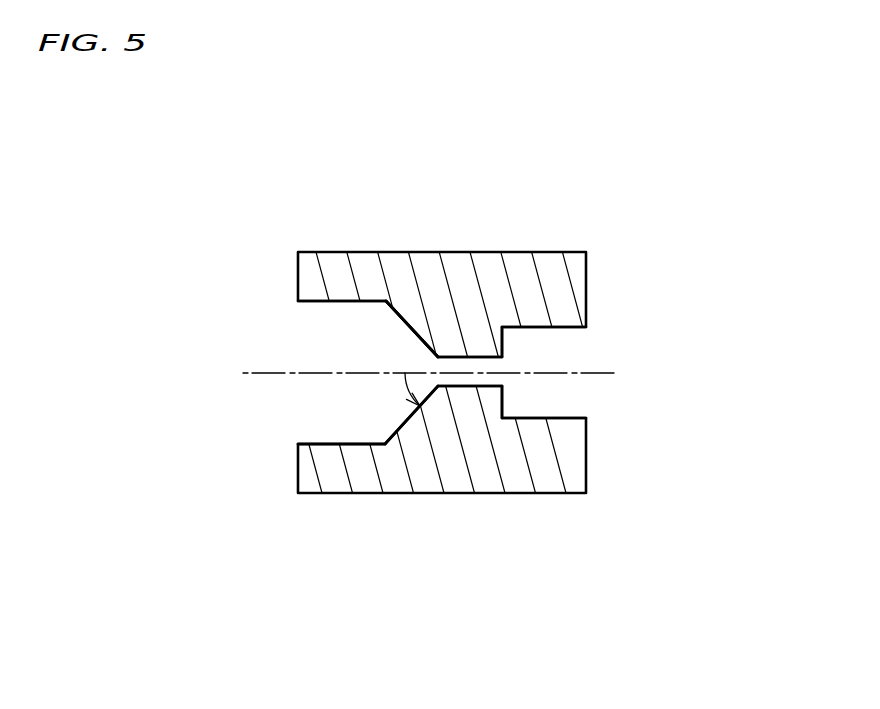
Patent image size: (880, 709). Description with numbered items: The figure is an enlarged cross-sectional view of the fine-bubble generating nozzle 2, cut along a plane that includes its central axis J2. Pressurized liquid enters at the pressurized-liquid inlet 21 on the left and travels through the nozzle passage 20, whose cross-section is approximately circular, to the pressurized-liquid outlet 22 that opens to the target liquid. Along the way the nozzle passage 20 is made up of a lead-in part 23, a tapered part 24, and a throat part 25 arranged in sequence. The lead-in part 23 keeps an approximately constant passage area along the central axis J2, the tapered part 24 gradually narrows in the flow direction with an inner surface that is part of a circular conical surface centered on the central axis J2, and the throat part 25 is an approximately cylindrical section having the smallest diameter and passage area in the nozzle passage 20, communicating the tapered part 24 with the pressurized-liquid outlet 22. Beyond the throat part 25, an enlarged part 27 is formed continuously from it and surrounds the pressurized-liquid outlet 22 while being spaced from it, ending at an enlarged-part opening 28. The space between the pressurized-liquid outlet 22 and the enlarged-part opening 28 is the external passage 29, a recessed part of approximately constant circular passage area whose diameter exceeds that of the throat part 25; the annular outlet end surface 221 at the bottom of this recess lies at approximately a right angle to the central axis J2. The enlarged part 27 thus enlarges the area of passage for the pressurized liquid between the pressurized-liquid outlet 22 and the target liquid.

The fine-bubble generating nozzle 2 is at (233, 198).
The central axis J2 is at (260, 372).
The nozzle passage 20 is at (372, 358).
The pressurized-liquid inlet 21 is at (303, 388).
The outlet end surface 221 is at (505, 343).
The pressurized-liquid outlet 22 is at (500, 364).
The lead-in part 23 is at (332, 450).
The tapered part 24 is at (418, 337).
The throat part 25 is at (471, 393).
The enlarged part 27 is at (527, 423).
The enlarged-part opening 28 is at (579, 385).
The external passage 29 is at (538, 392).